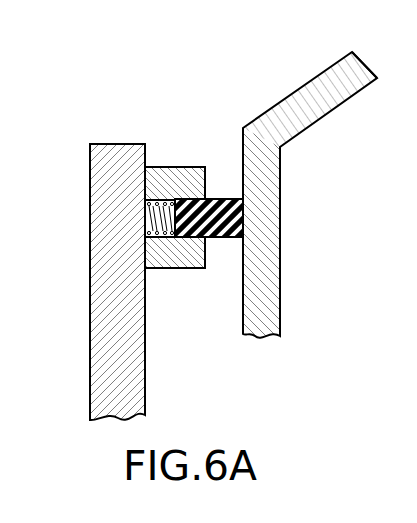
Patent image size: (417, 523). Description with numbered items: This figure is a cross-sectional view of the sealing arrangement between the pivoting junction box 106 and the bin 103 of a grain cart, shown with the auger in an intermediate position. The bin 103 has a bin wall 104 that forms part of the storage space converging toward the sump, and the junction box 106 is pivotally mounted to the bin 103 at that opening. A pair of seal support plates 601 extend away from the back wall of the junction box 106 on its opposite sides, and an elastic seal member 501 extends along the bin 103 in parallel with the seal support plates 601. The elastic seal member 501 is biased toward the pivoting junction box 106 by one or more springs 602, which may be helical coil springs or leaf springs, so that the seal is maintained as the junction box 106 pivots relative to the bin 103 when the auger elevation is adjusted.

The bin 103 is at (331, 63).
The bin wall 104 is at (358, 72).
The pivoting junction box 106 is at (102, 283).
The elastic seal member 501 is at (217, 199).
The seal support plate 601 is at (172, 172).
The spring 602 is at (143, 220).